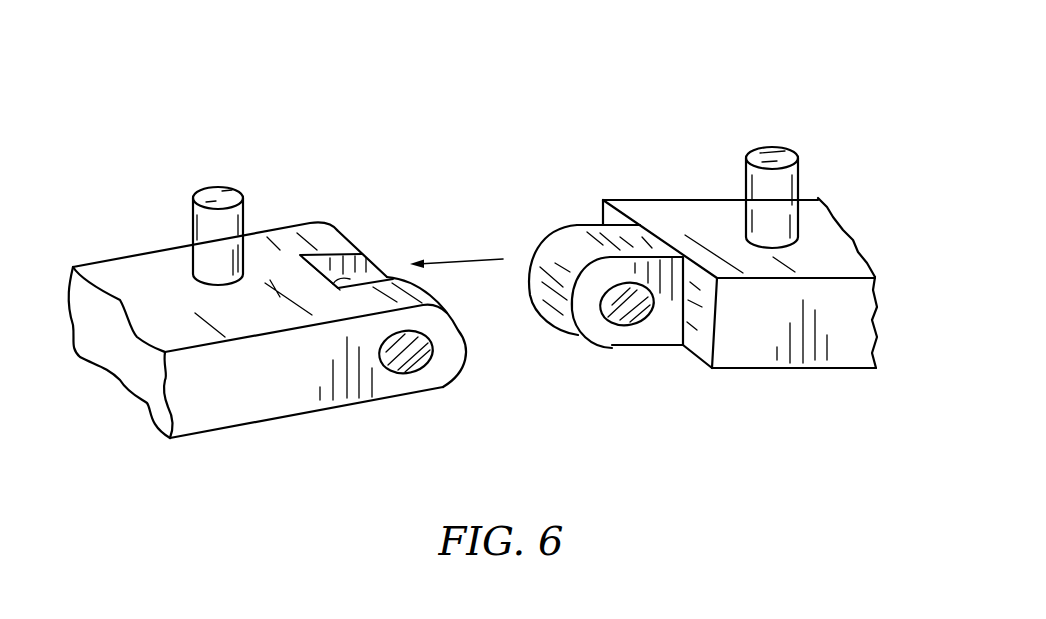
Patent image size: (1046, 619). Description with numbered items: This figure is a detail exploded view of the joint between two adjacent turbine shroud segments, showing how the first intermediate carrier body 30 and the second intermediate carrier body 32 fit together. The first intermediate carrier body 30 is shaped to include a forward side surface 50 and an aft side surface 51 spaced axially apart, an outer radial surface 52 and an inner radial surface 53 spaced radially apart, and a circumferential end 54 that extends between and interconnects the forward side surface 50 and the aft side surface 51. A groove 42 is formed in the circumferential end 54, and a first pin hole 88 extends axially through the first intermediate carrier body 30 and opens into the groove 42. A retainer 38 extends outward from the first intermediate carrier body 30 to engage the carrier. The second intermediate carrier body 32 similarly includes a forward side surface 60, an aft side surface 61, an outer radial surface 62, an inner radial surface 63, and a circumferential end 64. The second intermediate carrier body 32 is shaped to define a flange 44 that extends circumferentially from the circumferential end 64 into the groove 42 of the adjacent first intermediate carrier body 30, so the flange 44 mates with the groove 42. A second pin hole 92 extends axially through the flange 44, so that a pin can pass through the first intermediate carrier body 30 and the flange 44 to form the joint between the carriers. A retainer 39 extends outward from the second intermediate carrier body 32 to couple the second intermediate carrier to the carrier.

The first intermediate carrier body 30 is at (143, 143).
The retainer 38 is at (212, 185).
The forward side surface 50 is at (137, 255).
The outer radial surface 52 is at (115, 285).
The circumferential end 54 is at (350, 240).
The groove 42 is at (380, 265).
The aft side surface 51 is at (282, 400).
The inner radial surface 53 is at (205, 436).
The first pin hole 88 is at (417, 364).
The second intermediate carrier body 32 is at (840, 191).
The retainer 39 is at (787, 140).
The forward side surface 60 is at (718, 196).
The outer radial surface 62 is at (697, 218).
The circumferential end 64 is at (602, 222).
The flange 44 is at (567, 345).
The second pin hole 92 is at (640, 327).
The aft side surface 61 is at (768, 370).
The inner radial surface 63 is at (867, 350).